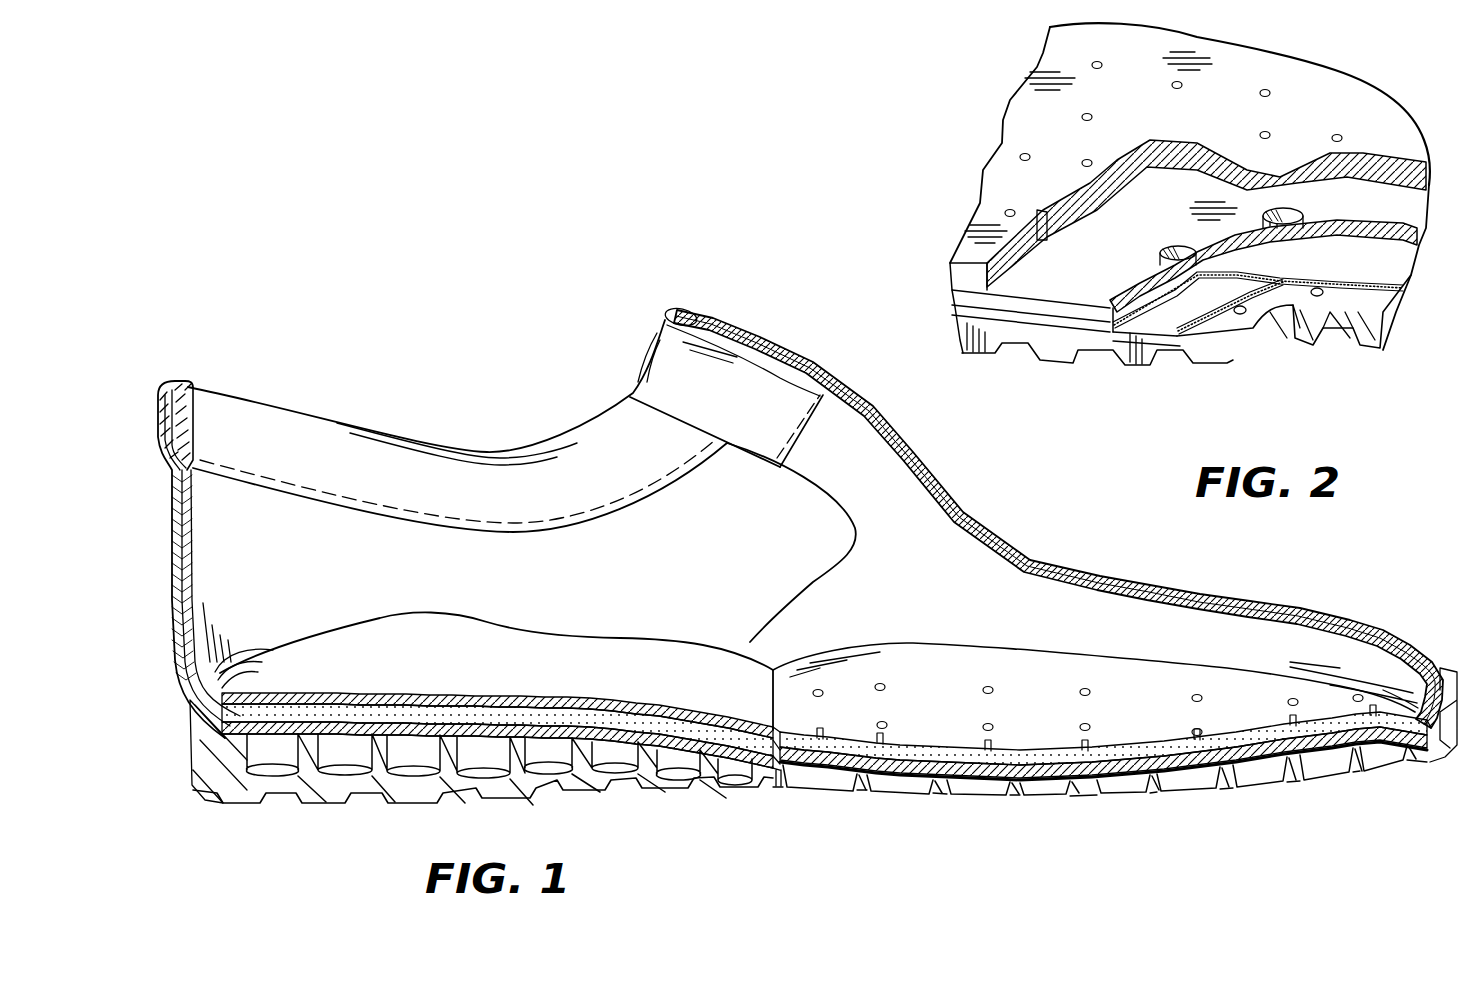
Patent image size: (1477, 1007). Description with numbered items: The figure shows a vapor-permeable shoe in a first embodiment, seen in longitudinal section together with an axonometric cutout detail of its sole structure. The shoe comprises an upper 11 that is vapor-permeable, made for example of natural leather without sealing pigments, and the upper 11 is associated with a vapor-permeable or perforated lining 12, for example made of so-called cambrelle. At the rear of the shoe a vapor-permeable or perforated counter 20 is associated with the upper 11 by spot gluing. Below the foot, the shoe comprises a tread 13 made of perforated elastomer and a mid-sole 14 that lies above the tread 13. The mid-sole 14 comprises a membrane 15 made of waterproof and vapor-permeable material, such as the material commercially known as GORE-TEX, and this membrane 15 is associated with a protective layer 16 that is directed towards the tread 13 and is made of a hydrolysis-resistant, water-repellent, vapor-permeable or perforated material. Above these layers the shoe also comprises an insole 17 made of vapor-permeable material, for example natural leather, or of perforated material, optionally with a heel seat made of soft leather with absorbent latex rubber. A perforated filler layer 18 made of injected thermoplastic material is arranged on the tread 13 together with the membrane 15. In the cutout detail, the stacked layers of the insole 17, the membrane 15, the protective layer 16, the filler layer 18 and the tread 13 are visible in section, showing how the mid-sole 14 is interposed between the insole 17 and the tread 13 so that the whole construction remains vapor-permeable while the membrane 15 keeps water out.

In FIG. 1, the upper 11 is at (698, 307).
In FIG. 1, the lining 12 is at (877, 433).
In FIG. 1, the tread 13 is at (1128, 795).
In FIG. 2, the tread 13 is at (1258, 353).
In FIG. 1, the mid-sole 14 is at (777, 770).
In FIG. 2, the mid-sole 14 is at (1157, 340).
In FIG. 1, the membrane 15 is at (1325, 768).
In FIG. 2, the membrane 15 is at (1387, 264).
In FIG. 1, the protective layer 16 is at (1267, 787).
In FIG. 2, the protective layer 16 is at (1200, 342).
In FIG. 1, the insole 17 is at (1177, 790).
In FIG. 2, the insole 17 is at (1030, 120).
In FIG. 1, the perforated filler layer 18 is at (1067, 795).
In FIG. 2, the perforated filler layer 18 is at (1103, 290).
In FIG. 1, the counter 20 is at (184, 642).